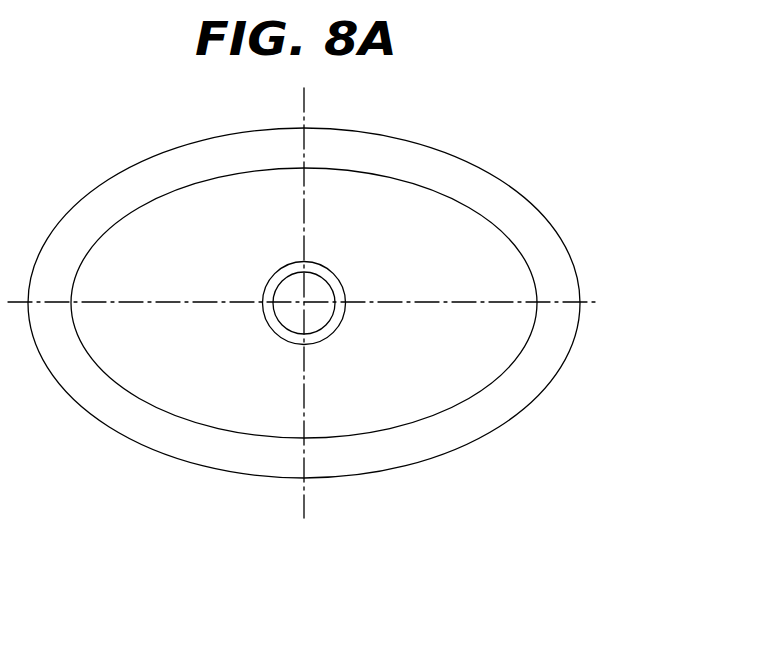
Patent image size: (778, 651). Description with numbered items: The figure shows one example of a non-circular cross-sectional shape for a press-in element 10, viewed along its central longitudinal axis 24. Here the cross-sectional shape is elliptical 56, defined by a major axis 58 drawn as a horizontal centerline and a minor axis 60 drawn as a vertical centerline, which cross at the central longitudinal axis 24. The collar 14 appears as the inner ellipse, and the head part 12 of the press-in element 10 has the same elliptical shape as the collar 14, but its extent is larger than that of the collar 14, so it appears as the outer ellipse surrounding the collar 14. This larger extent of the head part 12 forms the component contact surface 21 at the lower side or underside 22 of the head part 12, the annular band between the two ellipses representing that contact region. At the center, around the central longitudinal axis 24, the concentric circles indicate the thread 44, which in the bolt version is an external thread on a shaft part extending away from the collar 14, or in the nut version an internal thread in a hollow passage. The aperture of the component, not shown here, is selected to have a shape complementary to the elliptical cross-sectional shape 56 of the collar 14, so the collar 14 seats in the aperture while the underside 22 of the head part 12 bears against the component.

The press-in element 10 is at (552, 136).
The head part 12 is at (557, 378).
The collar 14 is at (453, 235).
The component contact surface 21 is at (497, 405).
The underside 22 is at (350, 465).
The central longitudinal axis 24 is at (304, 303).
The thread 44 is at (265, 324).
The elliptical cross-sectional shape 56 is at (432, 383).
The major axis 58 is at (180, 301).
The minor axis 60 is at (304, 242).